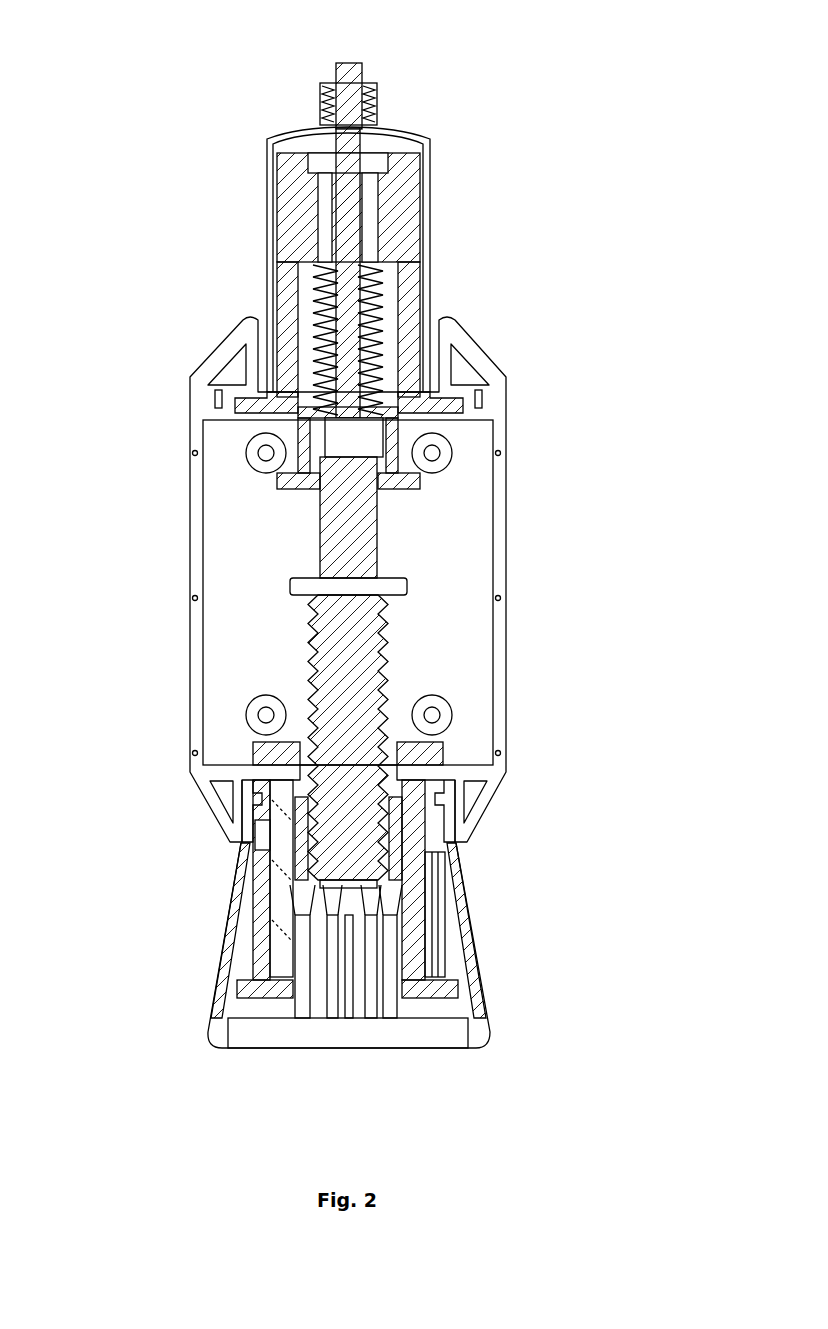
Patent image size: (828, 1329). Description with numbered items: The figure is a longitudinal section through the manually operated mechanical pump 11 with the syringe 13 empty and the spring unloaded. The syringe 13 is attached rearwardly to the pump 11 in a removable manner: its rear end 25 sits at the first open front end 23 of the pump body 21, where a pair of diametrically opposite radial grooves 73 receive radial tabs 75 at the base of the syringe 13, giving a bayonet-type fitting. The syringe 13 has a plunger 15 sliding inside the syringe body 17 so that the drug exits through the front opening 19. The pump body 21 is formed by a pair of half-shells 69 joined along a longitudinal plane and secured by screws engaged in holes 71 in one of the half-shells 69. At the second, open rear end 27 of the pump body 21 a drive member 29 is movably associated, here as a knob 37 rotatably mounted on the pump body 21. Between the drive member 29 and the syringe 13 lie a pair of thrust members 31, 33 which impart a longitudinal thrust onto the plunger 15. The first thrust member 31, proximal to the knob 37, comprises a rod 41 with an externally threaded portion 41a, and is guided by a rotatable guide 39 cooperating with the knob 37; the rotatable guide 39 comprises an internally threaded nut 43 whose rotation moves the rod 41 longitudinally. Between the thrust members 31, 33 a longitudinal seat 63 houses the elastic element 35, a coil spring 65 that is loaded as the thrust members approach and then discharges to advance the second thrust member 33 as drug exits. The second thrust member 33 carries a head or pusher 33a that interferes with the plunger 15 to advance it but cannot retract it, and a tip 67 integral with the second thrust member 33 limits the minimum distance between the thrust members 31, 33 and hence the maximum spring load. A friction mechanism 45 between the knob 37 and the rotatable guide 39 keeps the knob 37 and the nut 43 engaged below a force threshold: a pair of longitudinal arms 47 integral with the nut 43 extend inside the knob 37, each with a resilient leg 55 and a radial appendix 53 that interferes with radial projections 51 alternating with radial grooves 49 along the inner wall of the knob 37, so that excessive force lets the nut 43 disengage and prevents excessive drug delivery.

The manually operated mechanical pump 11 is at (533, 1057).
The syringe 13 is at (436, 168).
The plunger 15 is at (300, 157).
The syringe body 17 is at (434, 238).
The front opening 19 is at (360, 68).
The pump body 21 is at (509, 508).
The first open front end 23 is at (347, 386).
The rear end of the syringe 25 is at (400, 396).
The second open rear end 27 is at (307, 763).
The drive member 29 is at (468, 900).
The first thrust member 31 is at (318, 520).
The second thrust member 33 is at (403, 294).
The head or pusher 33a is at (434, 138).
The elastic element 35 is at (320, 283).
The knob 37 is at (228, 939).
The rotatable guide 39 is at (447, 747).
The rod 41 is at (352, 587).
The externally threaded portion 41a is at (385, 640).
The internally threaded nut 43 is at (413, 755).
The friction mechanism 45 is at (323, 992).
The longitudinal arms 47 is at (430, 950).
The radial grooves 49 is at (263, 903).
The radial projections 51 is at (235, 957).
The radial appendix 53 is at (447, 985).
The resilient leg 55 is at (417, 875).
The longitudinal seat 63 is at (372, 216).
The coil spring 65 is at (380, 372).
The tip 67 is at (335, 200).
The half-shells 69 is at (509, 427).
The holes 71 is at (438, 455).
The radial grooves 73 is at (256, 425).
The radial tabs 75 is at (460, 399).